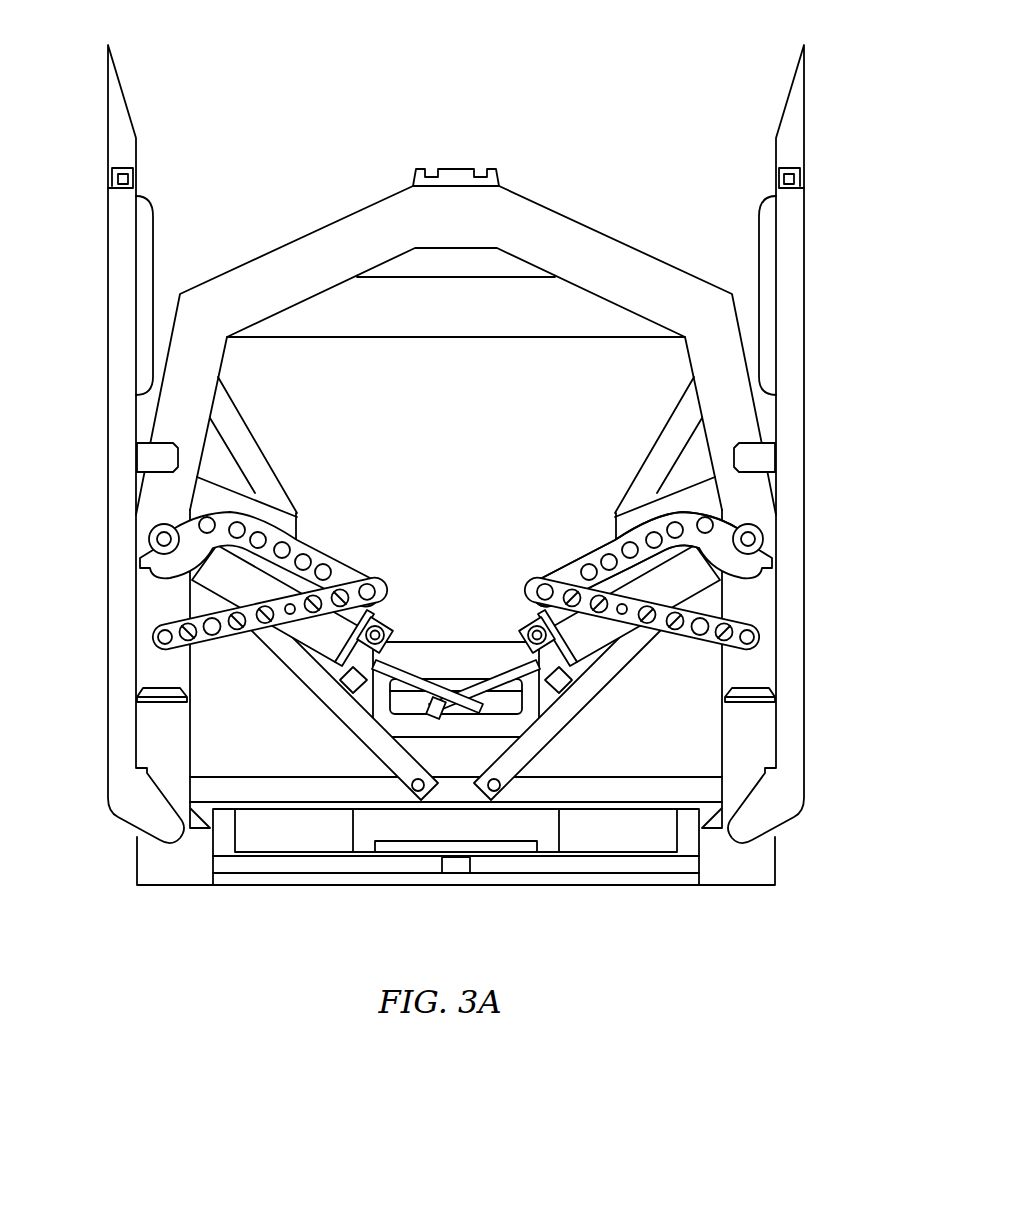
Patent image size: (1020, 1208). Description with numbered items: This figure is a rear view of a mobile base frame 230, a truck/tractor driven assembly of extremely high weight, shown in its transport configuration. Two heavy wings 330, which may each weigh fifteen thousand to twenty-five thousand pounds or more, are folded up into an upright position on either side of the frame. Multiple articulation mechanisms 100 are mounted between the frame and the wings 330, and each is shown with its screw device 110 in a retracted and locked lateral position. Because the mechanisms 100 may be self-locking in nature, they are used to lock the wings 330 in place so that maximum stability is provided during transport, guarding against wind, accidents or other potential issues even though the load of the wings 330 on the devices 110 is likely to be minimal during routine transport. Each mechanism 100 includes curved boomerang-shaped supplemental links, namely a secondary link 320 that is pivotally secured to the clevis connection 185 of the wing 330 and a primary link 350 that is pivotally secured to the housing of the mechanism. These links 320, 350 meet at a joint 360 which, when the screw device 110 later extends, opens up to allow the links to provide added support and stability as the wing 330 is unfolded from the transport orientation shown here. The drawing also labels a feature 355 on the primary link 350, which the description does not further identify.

The mobile base frame 230 is at (608, 74).
The wing 330 is at (120, 392).
The clevis connection 185 is at (157, 534).
The screw device 110 is at (152, 574).
The secondary link 320 is at (590, 555).
The primary link 350 is at (738, 625).
The aperture 355 is at (291, 604).
The joint 360 is at (369, 586).
The articulation mechanism 100 is at (329, 645).